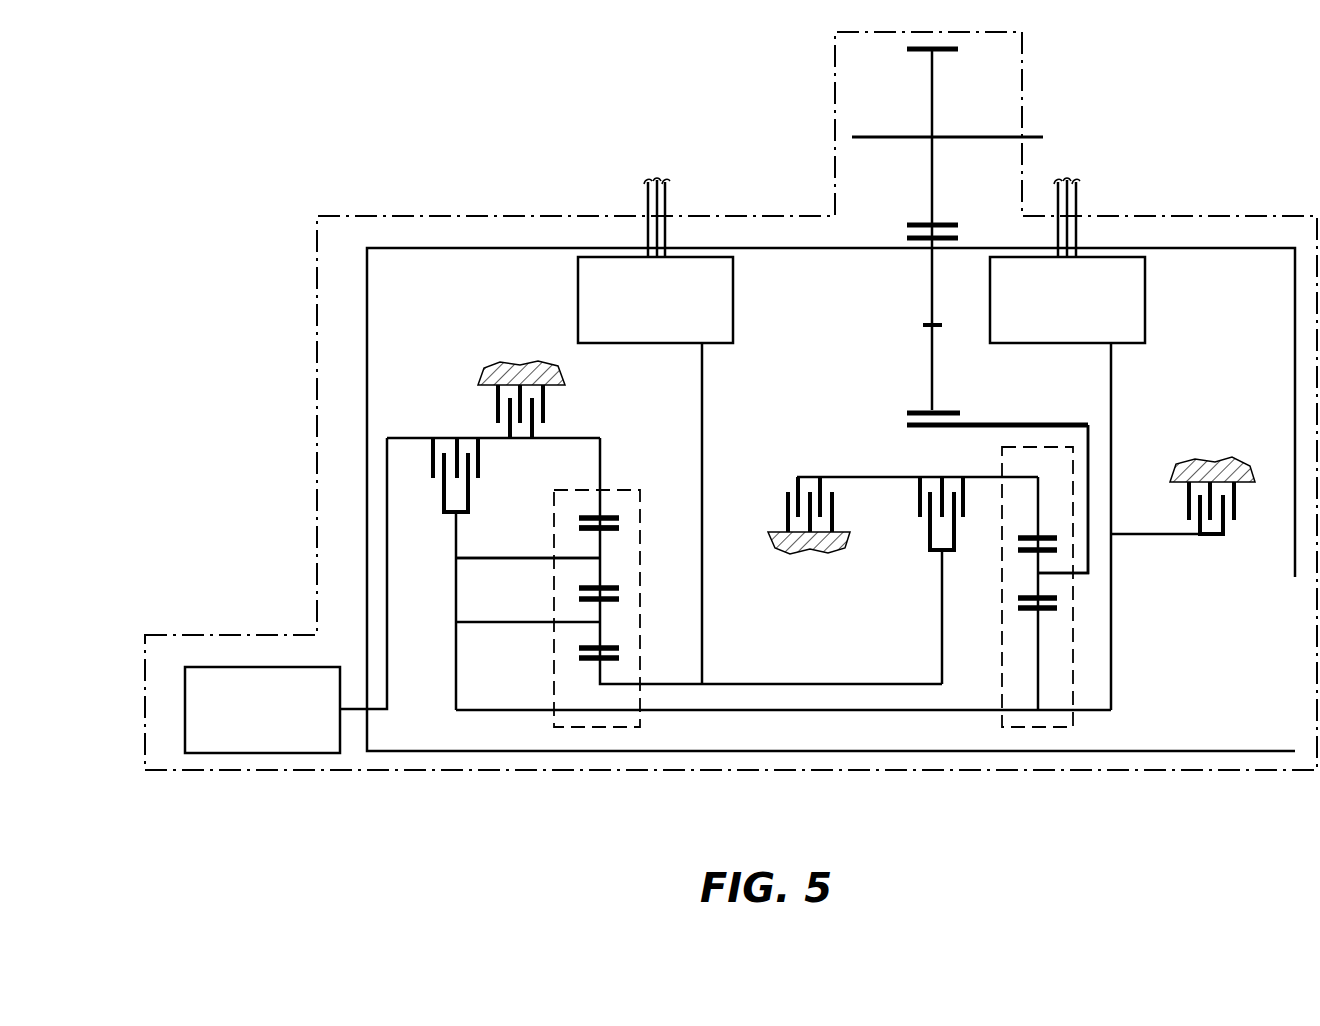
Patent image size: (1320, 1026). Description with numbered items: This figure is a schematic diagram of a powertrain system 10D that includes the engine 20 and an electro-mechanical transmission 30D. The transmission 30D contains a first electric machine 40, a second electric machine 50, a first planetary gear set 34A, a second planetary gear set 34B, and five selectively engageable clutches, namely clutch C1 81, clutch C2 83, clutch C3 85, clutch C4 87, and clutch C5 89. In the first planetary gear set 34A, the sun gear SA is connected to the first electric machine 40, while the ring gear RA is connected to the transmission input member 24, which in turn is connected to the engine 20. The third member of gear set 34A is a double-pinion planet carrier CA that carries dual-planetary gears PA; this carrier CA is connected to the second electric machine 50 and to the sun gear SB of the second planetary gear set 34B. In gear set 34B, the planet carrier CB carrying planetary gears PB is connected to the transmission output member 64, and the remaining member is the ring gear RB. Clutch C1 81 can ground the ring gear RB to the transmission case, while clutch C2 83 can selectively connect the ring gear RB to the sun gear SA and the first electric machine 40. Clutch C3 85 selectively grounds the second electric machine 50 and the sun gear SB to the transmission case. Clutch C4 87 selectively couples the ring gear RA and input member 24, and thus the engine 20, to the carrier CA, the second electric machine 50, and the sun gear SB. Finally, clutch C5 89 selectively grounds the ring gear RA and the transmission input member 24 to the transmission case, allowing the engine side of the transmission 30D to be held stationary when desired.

The powertrain system 10D is at (928, 776).
The electro-mechanical transmission 30D is at (798, 756).
The engine 20 is at (262, 710).
The transmission input member 24 is at (387, 716).
The first electric machine 40 is at (655, 431).
The second electric machine 50 is at (1067, 444).
The transmission output member 64 is at (1037, 137).
The clutch C5 89 is at (488, 406).
The clutch C4 87 is at (432, 517).
The clutch C1 81 is at (775, 518).
The clutch C2 83 is at (913, 525).
The clutch C3 85 is at (1247, 524).
The first planetary gear set 34A is at (629, 486).
The second planetary gear set 34B is at (1000, 460).
The clutch C1 is at (789, 504).
The clutch C2 is at (921, 513).
The clutch C3 is at (1232, 508).
The clutch C4 is at (440, 475).
The clutch C5 is at (540, 411).
The ring gear RA is at (596, 516).
The double-pinion planet carrier CA is at (535, 556).
The dual-planetary gears PA is at (606, 531).
The sun gear SA is at (591, 660).
The ring gear RB is at (1034, 537).
The planetary gears PB is at (1030, 553).
The sun gear SB is at (1033, 612).
The planet carrier CB is at (1082, 578).